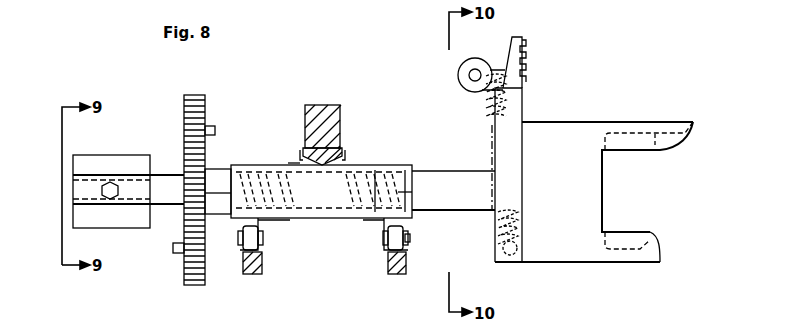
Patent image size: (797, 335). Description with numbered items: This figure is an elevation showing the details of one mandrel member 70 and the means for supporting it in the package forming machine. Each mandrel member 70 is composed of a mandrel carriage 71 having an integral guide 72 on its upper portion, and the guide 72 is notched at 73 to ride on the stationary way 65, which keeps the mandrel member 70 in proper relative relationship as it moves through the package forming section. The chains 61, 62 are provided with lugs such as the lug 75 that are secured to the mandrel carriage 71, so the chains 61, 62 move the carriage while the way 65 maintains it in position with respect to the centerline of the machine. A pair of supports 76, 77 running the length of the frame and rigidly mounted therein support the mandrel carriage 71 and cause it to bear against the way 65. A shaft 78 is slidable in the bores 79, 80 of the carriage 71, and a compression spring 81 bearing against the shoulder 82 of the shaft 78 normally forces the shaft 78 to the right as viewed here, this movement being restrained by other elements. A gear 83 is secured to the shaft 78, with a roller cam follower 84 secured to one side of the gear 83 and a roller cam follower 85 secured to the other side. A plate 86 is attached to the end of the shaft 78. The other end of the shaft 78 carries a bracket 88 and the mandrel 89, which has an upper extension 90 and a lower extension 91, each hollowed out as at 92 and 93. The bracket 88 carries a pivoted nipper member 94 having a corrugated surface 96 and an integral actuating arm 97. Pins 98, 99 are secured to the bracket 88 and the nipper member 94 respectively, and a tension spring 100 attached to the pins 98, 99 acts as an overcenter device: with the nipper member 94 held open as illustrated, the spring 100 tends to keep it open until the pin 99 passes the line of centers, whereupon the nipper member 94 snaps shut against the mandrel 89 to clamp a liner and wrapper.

The chain 61 is at (240, 238).
The chain 62 is at (410, 246).
The stationary way 65 is at (343, 141).
The mandrel member 70 is at (263, 103).
The mandrel carriage 71 is at (240, 165).
The guide 72 is at (343, 164).
The notch 73 is at (300, 163).
The lug 75 is at (384, 238).
The support 76 is at (246, 268).
The support 77 is at (390, 268).
The shaft 78 is at (166, 166).
The bore 79 is at (218, 172).
The bore 80 is at (411, 165).
The compression spring 81 is at (378, 165).
The shoulder 82 is at (412, 192).
The gear 83 is at (197, 95).
The roller cam follower 84 is at (212, 126).
The roller cam follower 85 is at (173, 250).
The plate 86 is at (88, 157).
The bracket 88 is at (502, 263).
The mandrel 89 is at (562, 122).
The upper extension 90 is at (640, 122).
The lower extension 91 is at (620, 263).
The hollowed-out portion 92 is at (656, 150).
The hollowed-out portion 93 is at (650, 234).
The nipper member 94 is at (507, 50).
The corrugated surface 96 is at (528, 58).
The actuating arm 97 is at (472, 90).
The pin 98 is at (514, 264).
The pin 99 is at (486, 106).
The tension spring 100 is at (488, 126).